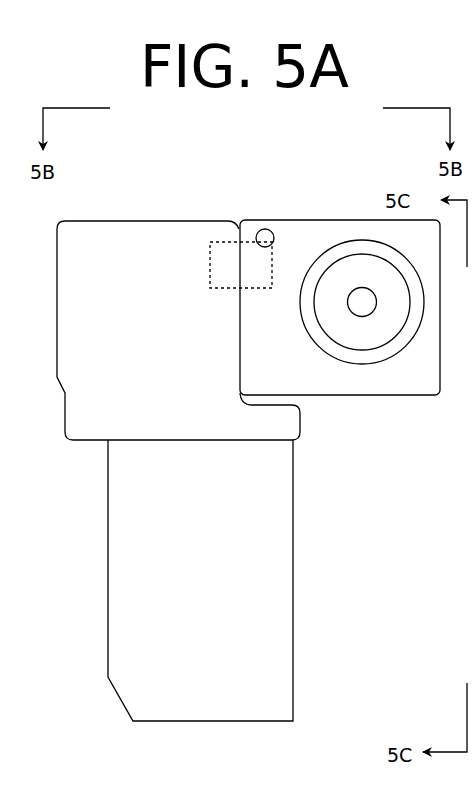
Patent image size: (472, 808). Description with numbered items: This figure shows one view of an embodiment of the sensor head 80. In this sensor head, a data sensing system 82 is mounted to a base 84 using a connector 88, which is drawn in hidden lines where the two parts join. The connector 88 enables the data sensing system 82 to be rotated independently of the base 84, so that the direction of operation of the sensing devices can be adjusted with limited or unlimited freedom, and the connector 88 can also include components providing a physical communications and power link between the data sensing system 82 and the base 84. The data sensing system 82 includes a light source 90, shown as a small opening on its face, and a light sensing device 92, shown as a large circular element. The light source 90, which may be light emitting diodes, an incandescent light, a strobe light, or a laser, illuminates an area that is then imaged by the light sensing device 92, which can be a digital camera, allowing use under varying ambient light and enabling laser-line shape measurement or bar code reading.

The sensor head 80 is at (376, 676).
The data sensing system 82 is at (287, 368).
The base 84 is at (154, 340).
The connector 88 is at (222, 242).
The light source 90 is at (262, 229).
The light sensing device 92 is at (355, 273).